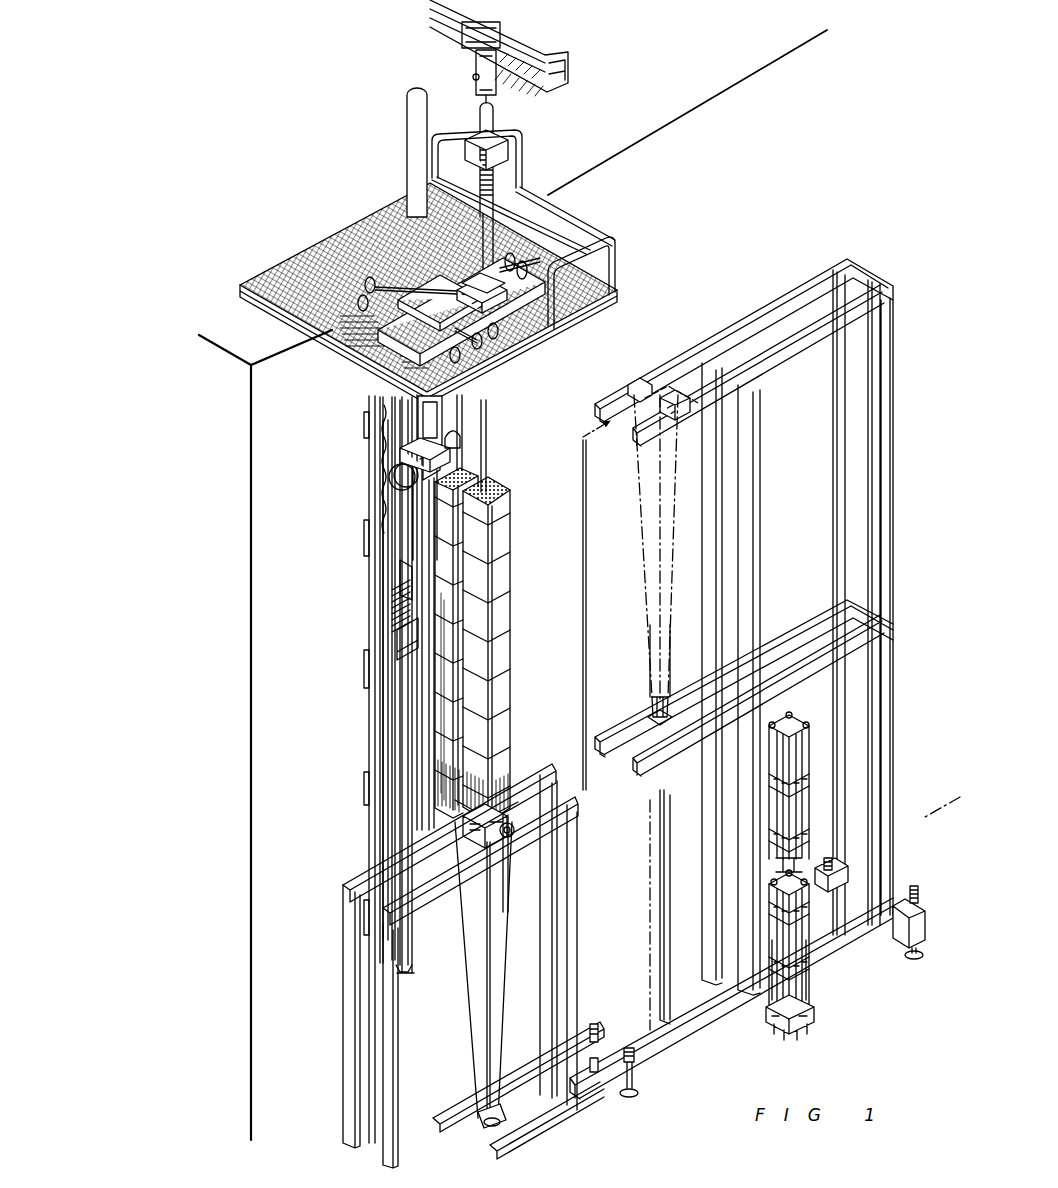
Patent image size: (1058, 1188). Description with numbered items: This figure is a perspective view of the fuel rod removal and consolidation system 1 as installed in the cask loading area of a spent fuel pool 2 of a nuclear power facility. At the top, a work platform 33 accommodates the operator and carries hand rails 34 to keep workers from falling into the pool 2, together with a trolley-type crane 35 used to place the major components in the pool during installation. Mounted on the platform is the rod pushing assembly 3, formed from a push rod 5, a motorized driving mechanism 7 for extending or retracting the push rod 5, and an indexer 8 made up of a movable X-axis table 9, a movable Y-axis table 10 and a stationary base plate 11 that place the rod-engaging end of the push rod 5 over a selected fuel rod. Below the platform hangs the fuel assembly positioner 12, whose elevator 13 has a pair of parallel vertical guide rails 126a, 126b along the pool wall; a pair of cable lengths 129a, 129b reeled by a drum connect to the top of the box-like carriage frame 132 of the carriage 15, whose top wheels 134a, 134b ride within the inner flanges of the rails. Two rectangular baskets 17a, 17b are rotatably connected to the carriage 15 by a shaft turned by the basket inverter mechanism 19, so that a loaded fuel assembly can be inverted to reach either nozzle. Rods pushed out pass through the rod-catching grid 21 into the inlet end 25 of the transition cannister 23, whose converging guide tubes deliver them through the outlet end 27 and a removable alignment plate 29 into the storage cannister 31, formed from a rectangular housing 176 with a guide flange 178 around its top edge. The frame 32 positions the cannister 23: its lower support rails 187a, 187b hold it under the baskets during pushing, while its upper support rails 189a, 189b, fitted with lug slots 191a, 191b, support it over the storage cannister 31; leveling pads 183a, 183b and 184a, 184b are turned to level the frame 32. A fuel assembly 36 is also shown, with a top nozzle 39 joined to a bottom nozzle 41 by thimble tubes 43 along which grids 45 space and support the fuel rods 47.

The fuel rod removal and consolidation system 1 is at (301, 122).
The spent fuel pool 2 is at (706, 192).
The rod pushing assembly 3 is at (456, 113).
The push rod 5 is at (484, 412).
The motorized driving mechanism 7 is at (524, 157).
The indexer 8 is at (392, 345).
The X-axis table 9 is at (508, 303).
The Y-axis table 10 is at (478, 325).
The base plate 11 is at (442, 368).
The fuel assembly positioner 12 is at (367, 605).
The elevator 13 is at (387, 686).
The carriage 15 is at (407, 508).
The rectangular basket 17a is at (505, 597).
The rectangular basket 17b is at (455, 665).
The basket inverter mechanism 19 is at (430, 615).
The rod-catching grid 21 is at (505, 790).
The transition cannister 23 is at (500, 956).
The inlet end 25 is at (470, 823).
The outlet end 27 is at (490, 1113).
The removable alignment plate 29 is at (480, 1120).
The storage cannister 31 is at (662, 838).
The frame 32 is at (822, 270).
The work platform 33 is at (343, 232).
The hand rail 34 is at (588, 233).
The trolley-type crane 35 is at (486, 42).
The fuel assembly 36 is at (816, 990).
The top nozzle 39 is at (788, 715).
The bottom nozzle 41 is at (776, 1023).
The thimble tubes 43 is at (776, 862).
The grid 45 is at (806, 903).
The fuel rods 47 is at (804, 1002).
The guide rail 126a is at (390, 765).
The guide rail 126b is at (473, 440).
The cable length 129a is at (400, 425).
The cable length 129b is at (440, 413).
The carriage frame 132 is at (425, 541).
The top wheel 134a is at (390, 485).
The top wheel 134b is at (455, 457).
The rectangular housing 176 is at (655, 915).
The guide flange 178 is at (642, 725).
The leveling pad 183a is at (601, 1072).
The leveling pad 183b is at (632, 1095).
The leveling pad 184a is at (825, 860).
The leveling pad 184b is at (914, 958).
The lower support rail 187a is at (352, 881).
The lower support rail 187b is at (393, 905).
The upper support rail 189a is at (745, 325).
The upper support rail 189b is at (768, 352).
The lug slot 191a is at (633, 385).
The lug slot 191b is at (675, 405).